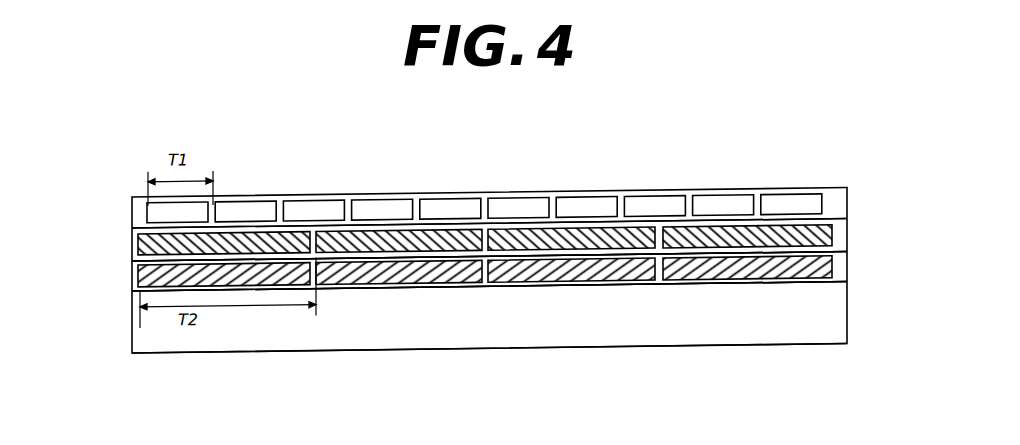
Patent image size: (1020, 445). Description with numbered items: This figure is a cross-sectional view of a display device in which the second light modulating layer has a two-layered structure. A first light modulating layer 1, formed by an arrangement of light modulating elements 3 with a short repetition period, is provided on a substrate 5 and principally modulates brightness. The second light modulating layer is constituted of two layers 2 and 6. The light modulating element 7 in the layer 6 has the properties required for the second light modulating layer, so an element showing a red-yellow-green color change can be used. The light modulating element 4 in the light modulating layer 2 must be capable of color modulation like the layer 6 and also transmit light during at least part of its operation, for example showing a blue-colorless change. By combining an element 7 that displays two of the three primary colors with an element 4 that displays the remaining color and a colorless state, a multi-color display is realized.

The first light modulating layer 1 is at (139, 207).
The second light modulating layer 2 is at (133, 246).
The light modulating element 3 is at (313, 208).
The light modulating element 4 is at (243, 245).
The substrate 5 is at (465, 321).
The light modulating layer 6 is at (133, 276).
The light modulating element 7 is at (288, 281).